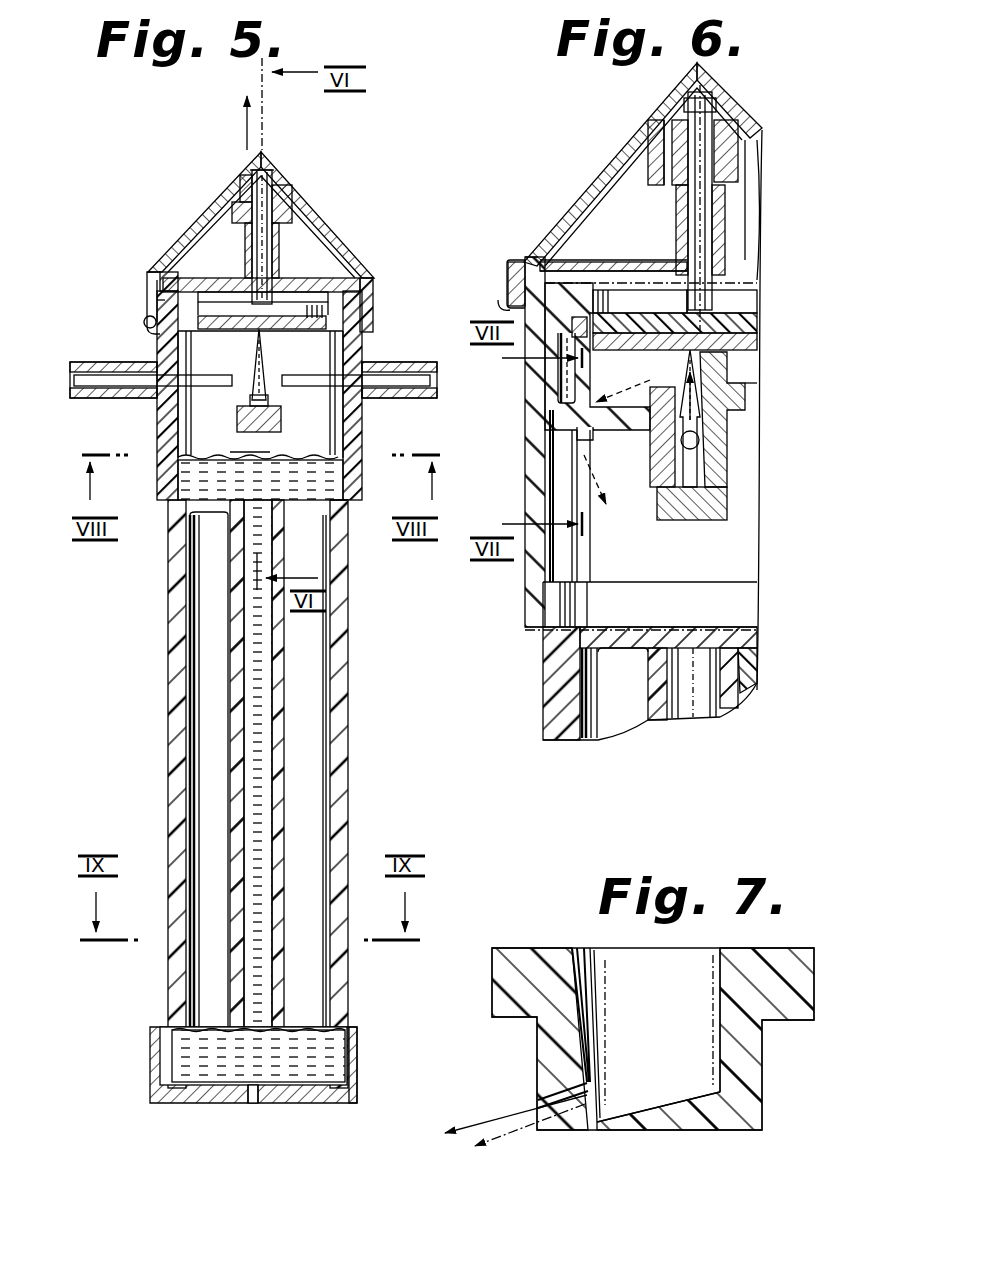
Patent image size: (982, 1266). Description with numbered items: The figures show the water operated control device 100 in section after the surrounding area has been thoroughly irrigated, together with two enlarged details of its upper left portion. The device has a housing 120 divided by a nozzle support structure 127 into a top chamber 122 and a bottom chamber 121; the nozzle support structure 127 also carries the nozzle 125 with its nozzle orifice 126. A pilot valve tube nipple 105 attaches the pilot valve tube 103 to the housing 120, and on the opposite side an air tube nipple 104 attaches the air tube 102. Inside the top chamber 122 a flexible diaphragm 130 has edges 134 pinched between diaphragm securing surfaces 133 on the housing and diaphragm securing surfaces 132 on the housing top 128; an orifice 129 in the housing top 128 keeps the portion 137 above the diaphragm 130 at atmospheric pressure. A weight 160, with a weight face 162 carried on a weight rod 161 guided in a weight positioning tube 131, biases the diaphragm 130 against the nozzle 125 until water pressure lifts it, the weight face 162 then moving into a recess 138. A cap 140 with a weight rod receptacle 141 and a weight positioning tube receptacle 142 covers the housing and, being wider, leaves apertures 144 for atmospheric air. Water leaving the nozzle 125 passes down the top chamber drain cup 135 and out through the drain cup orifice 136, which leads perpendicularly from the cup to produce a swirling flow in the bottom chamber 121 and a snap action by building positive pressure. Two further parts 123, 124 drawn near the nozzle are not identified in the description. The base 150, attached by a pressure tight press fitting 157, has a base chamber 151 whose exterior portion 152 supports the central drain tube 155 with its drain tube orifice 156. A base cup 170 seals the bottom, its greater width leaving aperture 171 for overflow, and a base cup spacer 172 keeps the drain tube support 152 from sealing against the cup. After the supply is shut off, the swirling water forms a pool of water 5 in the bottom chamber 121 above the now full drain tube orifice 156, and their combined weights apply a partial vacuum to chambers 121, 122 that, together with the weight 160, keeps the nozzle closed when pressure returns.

In FIG. 5, the pool of water 5 is at (272, 448).
In FIG. 5, the water operated control device 100 is at (224, 178).
In FIG. 5, the air tube 102 is at (86, 360).
In FIG. 5, the pilot valve tube 103 is at (432, 398).
In FIG. 5, the air tube nipple 104 is at (136, 398).
In FIG. 5, the pilot valve tube nipple 105 is at (394, 398).
In FIG. 5, the housing 120 is at (160, 492).
In FIG. 6, the housing 120 is at (516, 586).
In FIG. 5, the bottom chamber 121 is at (340, 452).
In FIG. 6, the bottom chamber 121 is at (742, 532).
In FIG. 5, the top chamber 122 is at (348, 336).
In FIG. 6, the top chamber 122 is at (750, 388).
In FIG. 5, the sleeve 123 is at (200, 400).
In FIG. 5, the nozzle block 124 is at (302, 388).
In FIG. 6, the nozzle block 124 is at (700, 500).
In FIG. 5, the nozzle 125 is at (252, 345).
In FIG. 6, the nozzle 125 is at (738, 366).
In FIG. 5, the nozzle orifice 126 is at (266, 345).
In FIG. 6, the nozzle orifice 126 is at (684, 368).
In FIG. 5, the nozzle support structure 127 is at (186, 402).
In FIG. 6, the nozzle support structure 127 is at (756, 431).
In FIG. 7, the nozzle support structure 127 is at (776, 998).
In FIG. 6, the housing top 128 is at (762, 265).
In FIG. 5, the orifice 129 is at (192, 262).
In FIG. 5, the diaphragm 130 is at (362, 292).
In FIG. 6, the diaphragm 130 is at (760, 322).
In FIG. 5, the weight positioning tube 131 is at (246, 205).
In FIG. 6, the weight positioning tube 131 is at (726, 200).
In FIG. 5, the diaphragm securing surfaces 132 is at (375, 286).
In FIG. 6, the diaphragm securing surfaces 132 is at (532, 254).
In FIG. 5, the diaphragm securing surfaces 133 is at (145, 318).
In FIG. 6, the diaphragm securing surfaces 133 is at (558, 338).
In FIG. 5, the edges of the diaphragm 134 is at (172, 296).
In FIG. 6, the edges of the diaphragm 134 is at (572, 330).
In FIG. 6, the top chamber drain cup 135 is at (550, 462).
In FIG. 7, the top chamber drain cup 135 is at (643, 990).
In FIG. 6, the drain cup orifice 136 is at (590, 440).
In FIG. 7, the drain cup orifice 136 is at (578, 1114).
In FIG. 5, the portion of the top chamber above the diaphragm 137 is at (212, 258).
In FIG. 6, the portion of the top chamber above the diaphragm 137 is at (586, 260).
In FIG. 6, the recess 138 is at (638, 300).
In FIG. 5, the cap 140 is at (300, 172).
In FIG. 6, the cap 140 is at (738, 82).
In FIG. 5, the weight rod receptacle 141 is at (270, 172).
In FIG. 6, the weight rod receptacle 141 is at (686, 102).
In FIG. 5, the weight positioning tube receptacle 142 is at (294, 192).
In FIG. 6, the weight positioning tube receptacle 142 is at (658, 130).
In FIG. 5, the apertures 144 is at (150, 316).
In FIG. 6, the apertures 144 is at (522, 310).
In FIG. 5, the base 150 is at (164, 706).
In FIG. 6, the base 150 is at (540, 728).
In FIG. 5, the base chamber 151 is at (206, 984).
In FIG. 6, the base chamber 151 is at (618, 708).
In FIG. 5, the drain tube support 152 is at (349, 786).
In FIG. 6, the drain tube support 152 is at (560, 726).
In FIG. 5, the drain tube 155 is at (284, 688).
In FIG. 6, the drain tube 155 is at (740, 684).
In FIG. 5, the drain tube orifice 156 is at (258, 794).
In FIG. 6, the drain tube orifice 156 is at (698, 698).
In FIG. 5, the pressure tight press fitting 157 is at (340, 492).
In FIG. 6, the pressure tight press fitting 157 is at (566, 606).
In FIG. 5, the weight 160 is at (278, 240).
In FIG. 6, the weight 160 is at (718, 100).
In FIG. 5, the weight rod 161 is at (262, 212).
In FIG. 6, the weight rod 161 is at (700, 156).
In FIG. 5, the weight face 162 is at (312, 292).
In FIG. 6, the weight face 162 is at (740, 306).
In FIG. 5, the base cup 170 is at (150, 1062).
In FIG. 5, the aperture 171 is at (350, 1040).
In FIG. 5, the base cup spacer 172 is at (253, 1102).